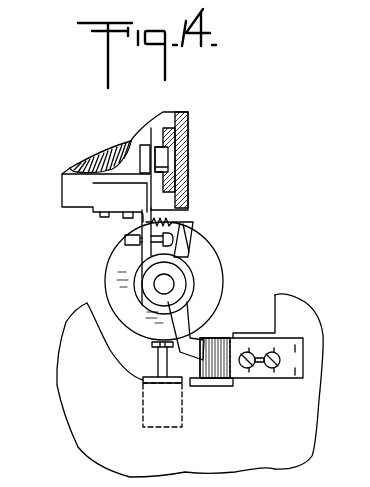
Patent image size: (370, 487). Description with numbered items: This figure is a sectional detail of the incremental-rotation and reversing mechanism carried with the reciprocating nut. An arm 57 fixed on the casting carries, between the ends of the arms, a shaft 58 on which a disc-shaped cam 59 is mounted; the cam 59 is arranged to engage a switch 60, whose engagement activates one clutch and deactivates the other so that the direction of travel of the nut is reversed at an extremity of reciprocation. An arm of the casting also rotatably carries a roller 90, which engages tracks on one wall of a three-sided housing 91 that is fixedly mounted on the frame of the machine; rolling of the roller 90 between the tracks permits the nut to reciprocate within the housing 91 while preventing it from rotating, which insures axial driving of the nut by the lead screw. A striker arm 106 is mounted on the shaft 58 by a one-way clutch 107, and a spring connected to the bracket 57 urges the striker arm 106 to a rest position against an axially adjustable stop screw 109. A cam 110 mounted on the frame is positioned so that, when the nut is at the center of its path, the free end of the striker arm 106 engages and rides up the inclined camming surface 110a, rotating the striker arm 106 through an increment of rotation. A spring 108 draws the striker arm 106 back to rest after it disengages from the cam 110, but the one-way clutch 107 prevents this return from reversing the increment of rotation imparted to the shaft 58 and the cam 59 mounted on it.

The arm 57 is at (137, 222).
The shaft 58 is at (166, 284).
The cam 59 is at (117, 278).
The switch 60 is at (160, 357).
The roller 90 is at (164, 160).
The three-sided housing 91 is at (182, 136).
The striker arm 106 is at (222, 296).
The one-way clutch 107 is at (174, 255).
The spring 108 is at (155, 222).
The stop screw 109 is at (127, 242).
The cam 110 is at (270, 381).
The camming surface 110a is at (213, 343).